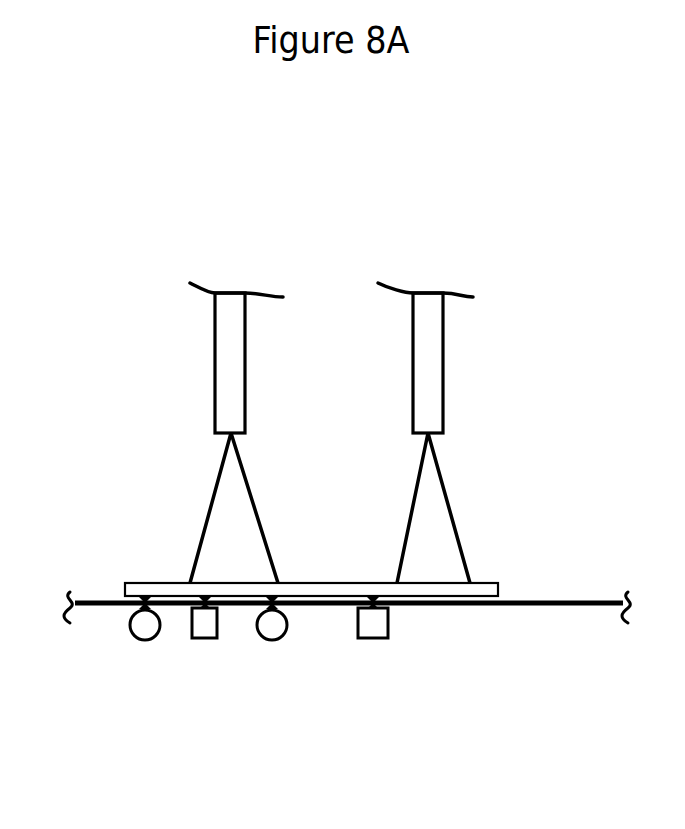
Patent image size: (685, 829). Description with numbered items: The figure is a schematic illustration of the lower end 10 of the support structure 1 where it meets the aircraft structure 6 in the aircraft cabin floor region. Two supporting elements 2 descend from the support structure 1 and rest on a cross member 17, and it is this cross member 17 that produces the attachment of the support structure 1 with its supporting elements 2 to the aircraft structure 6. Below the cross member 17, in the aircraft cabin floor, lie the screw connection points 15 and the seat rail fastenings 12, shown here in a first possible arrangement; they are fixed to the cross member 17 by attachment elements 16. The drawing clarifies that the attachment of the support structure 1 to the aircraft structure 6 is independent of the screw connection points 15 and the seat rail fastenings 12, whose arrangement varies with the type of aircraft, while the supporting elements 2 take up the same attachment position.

The support structure 1 is at (479, 359).
The lower end of the support structure 10 is at (196, 441).
The supporting elements 2 is at (470, 494).
The cross member 17 is at (498, 590).
The aircraft structure 6 is at (597, 612).
The screw connection points 15 is at (146, 640).
The seat rail fastenings 12 is at (205, 640).
The attachment elements 16 is at (375, 606).